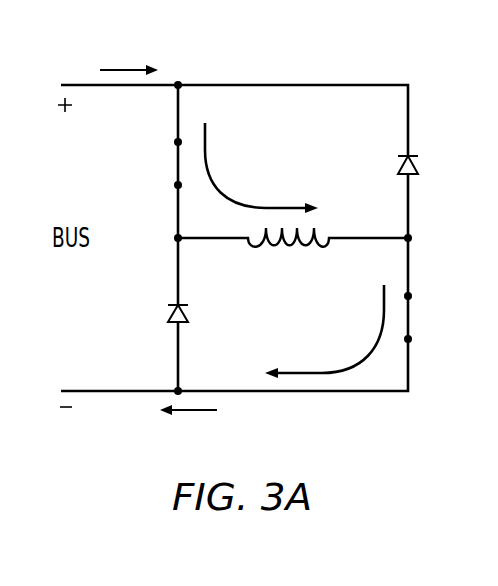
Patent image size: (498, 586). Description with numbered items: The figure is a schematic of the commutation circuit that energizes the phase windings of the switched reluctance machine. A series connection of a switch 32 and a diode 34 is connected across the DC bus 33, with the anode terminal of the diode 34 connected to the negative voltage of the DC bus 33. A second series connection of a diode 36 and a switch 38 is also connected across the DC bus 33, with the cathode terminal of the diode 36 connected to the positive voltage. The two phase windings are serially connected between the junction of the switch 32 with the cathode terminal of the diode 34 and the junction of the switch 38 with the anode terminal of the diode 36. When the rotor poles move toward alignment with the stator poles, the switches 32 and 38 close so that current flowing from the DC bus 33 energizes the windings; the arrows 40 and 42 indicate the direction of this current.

The DC bus 33 is at (82, 82).
The arrow 40 is at (127, 69).
The switch 32 is at (177, 167).
The diode 34 is at (167, 314).
The diode 36 is at (419, 168).
The switch 38 is at (410, 318).
The arrow 42 is at (378, 338).